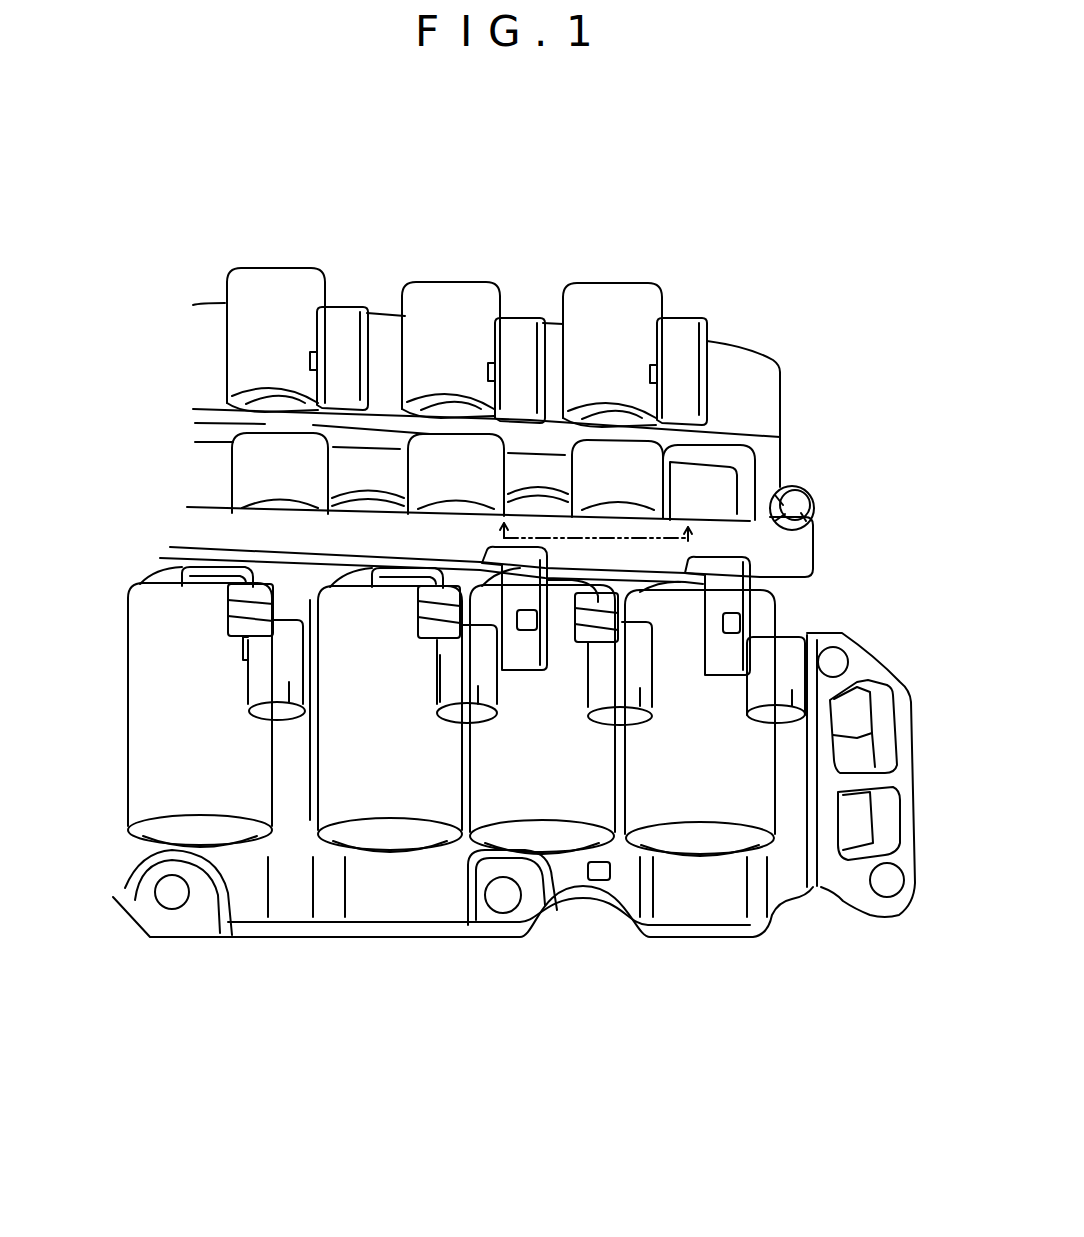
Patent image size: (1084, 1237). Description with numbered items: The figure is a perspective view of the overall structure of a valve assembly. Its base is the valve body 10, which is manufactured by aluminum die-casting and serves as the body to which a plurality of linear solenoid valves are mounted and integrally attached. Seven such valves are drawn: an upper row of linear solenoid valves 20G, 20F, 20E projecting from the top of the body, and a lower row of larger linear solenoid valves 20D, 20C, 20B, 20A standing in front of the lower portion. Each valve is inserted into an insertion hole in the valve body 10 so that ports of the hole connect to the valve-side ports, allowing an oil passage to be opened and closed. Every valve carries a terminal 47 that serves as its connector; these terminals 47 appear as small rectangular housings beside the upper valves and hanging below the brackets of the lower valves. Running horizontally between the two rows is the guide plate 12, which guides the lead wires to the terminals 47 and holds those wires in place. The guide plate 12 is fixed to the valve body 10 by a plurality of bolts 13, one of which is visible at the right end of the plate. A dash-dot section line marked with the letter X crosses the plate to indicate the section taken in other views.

The valve body 10 is at (788, 878).
The guide plate 12 is at (793, 549).
The bolt 13 is at (792, 500).
The linear solenoid valve 20A is at (697, 847).
The linear solenoid valve 20B is at (547, 847).
The linear solenoid valve 20C is at (400, 847).
The linear solenoid valve 20D is at (230, 847).
The linear solenoid valve 20E is at (608, 282).
The linear solenoid valve 20F is at (448, 278).
The linear solenoid valve 20G is at (330, 209).
The terminal 47 is at (343, 318).